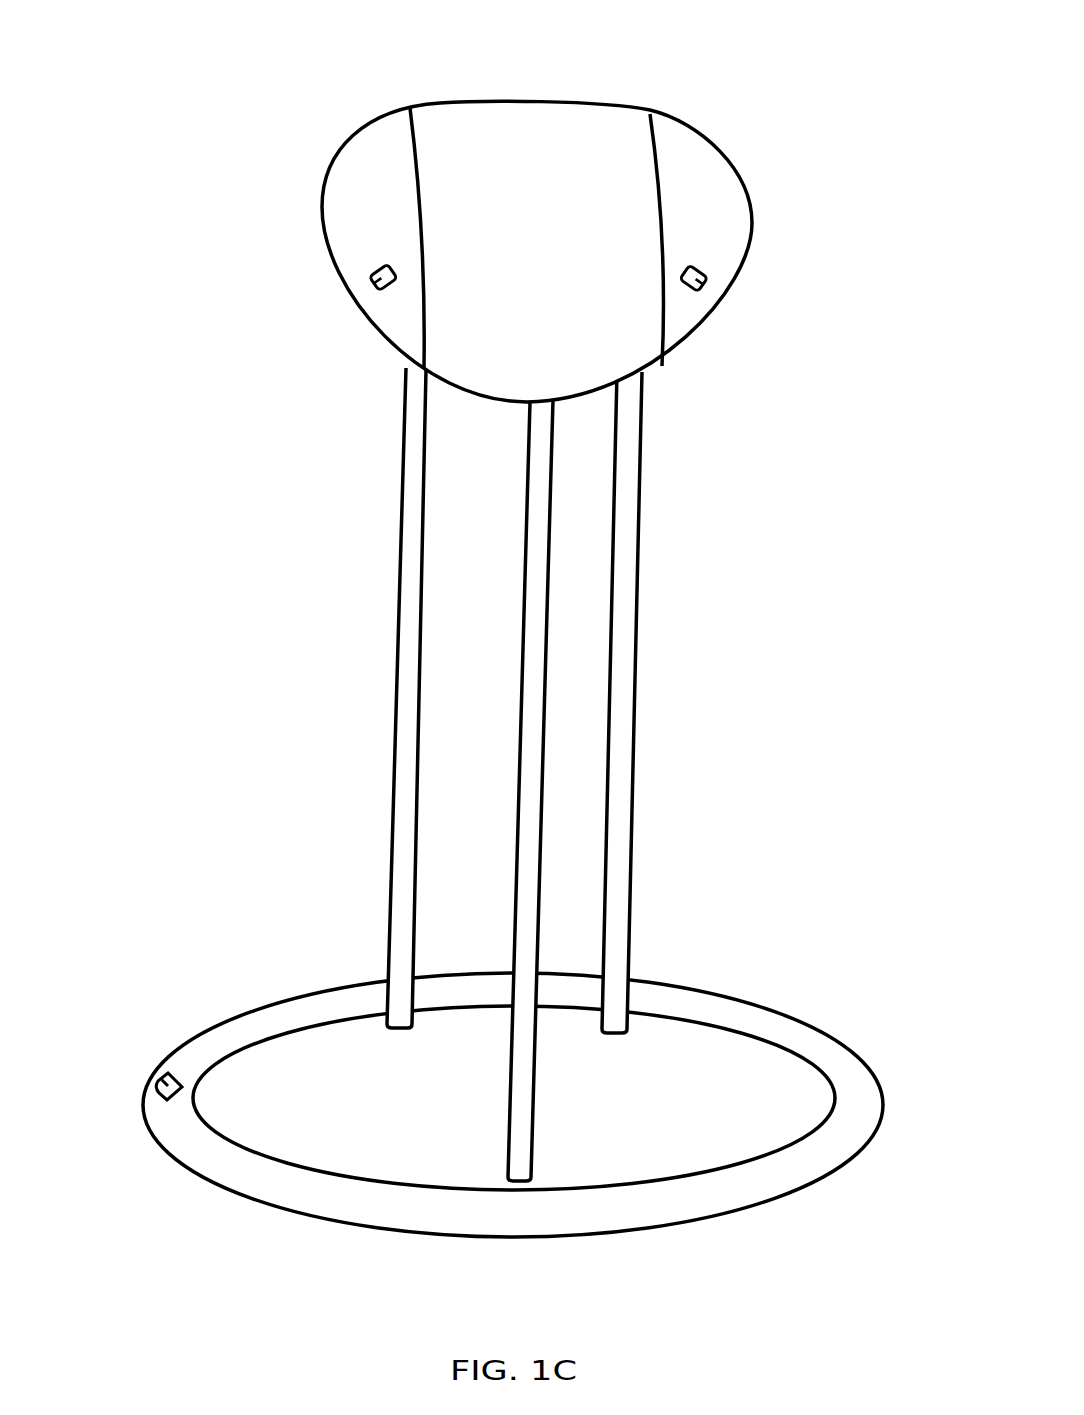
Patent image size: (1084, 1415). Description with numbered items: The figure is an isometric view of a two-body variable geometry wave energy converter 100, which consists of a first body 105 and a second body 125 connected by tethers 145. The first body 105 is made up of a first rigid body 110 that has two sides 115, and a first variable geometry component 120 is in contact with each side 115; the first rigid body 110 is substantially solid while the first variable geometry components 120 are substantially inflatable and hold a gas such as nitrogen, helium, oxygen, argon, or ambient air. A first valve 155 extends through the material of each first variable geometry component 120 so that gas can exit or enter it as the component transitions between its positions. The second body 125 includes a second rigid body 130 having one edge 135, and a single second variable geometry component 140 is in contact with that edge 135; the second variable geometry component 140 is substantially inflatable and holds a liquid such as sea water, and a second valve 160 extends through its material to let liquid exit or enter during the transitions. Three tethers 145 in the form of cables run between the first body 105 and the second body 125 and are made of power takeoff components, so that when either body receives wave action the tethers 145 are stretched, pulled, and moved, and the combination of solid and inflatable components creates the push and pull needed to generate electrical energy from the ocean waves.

The two-body variable geometry wave energy converter 100 is at (203, 36).
The first body 105 is at (805, 197).
The first rigid body 110 is at (555, 231).
The side 115 is at (412, 140).
The first variable geometry component 120 is at (395, 226).
The second body 125 is at (905, 1066).
The second rigid body 130 is at (642, 1109).
The edge 135 is at (722, 1032).
The second variable geometry component 140 is at (608, 1224).
The tether 145 is at (623, 643).
The first valve 155 is at (371, 278).
The second valve 160 is at (162, 1080).